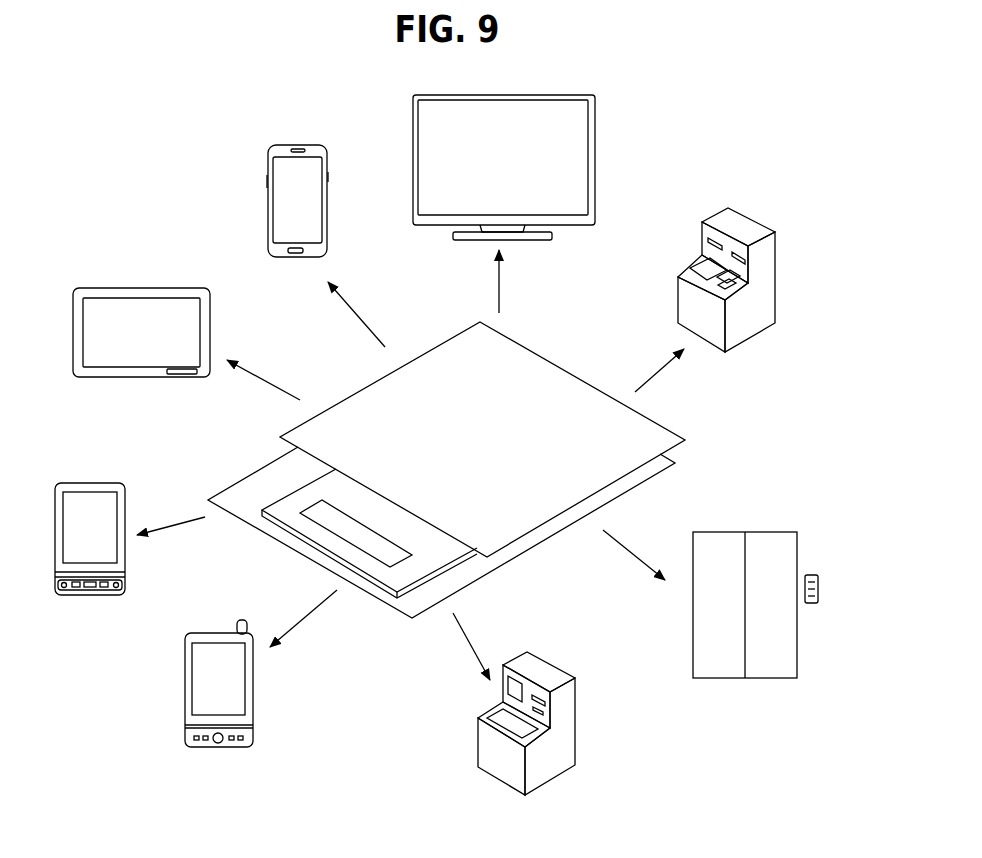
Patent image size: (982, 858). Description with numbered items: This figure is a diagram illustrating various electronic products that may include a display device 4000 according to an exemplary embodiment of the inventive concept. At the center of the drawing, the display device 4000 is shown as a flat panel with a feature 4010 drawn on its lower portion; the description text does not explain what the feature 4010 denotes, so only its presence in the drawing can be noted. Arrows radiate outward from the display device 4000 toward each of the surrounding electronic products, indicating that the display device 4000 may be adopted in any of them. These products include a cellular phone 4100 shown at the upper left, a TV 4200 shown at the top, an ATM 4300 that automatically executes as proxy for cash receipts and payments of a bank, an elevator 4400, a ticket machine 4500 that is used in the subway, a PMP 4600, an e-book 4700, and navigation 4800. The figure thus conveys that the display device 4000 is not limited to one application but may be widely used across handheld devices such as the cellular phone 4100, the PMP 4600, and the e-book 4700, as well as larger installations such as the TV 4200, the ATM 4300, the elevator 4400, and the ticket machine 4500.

The display device 4000 is at (533, 353).
The transmission coil slot 4010 is at (310, 506).
The cellular phone 4100 is at (295, 164).
The TV 4200 is at (535, 167).
The ATM 4300 is at (756, 280).
The elevator 4400 is at (755, 578).
The ticket machine 4500 is at (571, 723).
The PMP 4600 is at (251, 683).
The e-book 4700 is at (90, 513).
The navigation 4800 is at (141, 308).